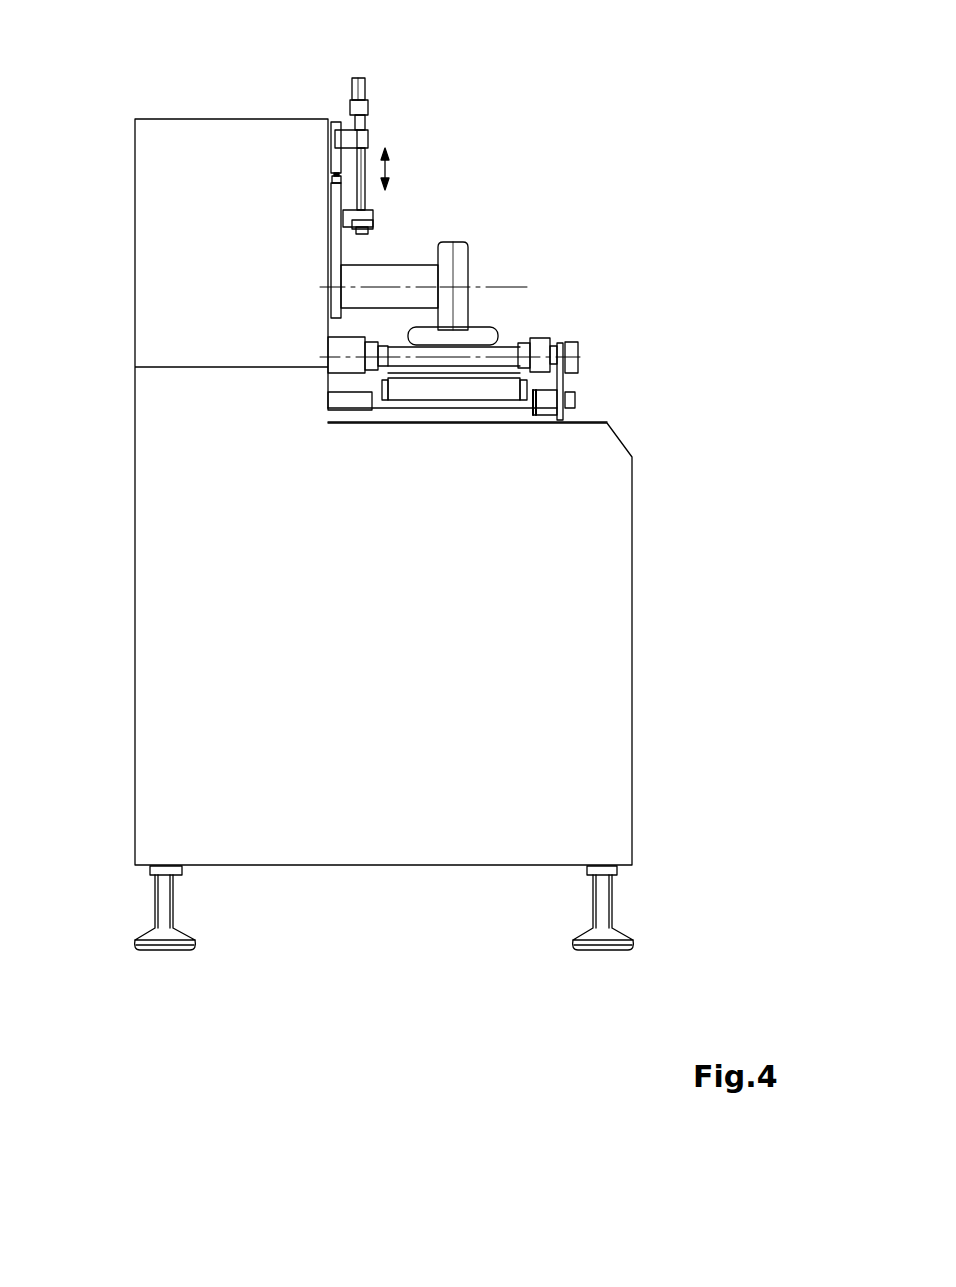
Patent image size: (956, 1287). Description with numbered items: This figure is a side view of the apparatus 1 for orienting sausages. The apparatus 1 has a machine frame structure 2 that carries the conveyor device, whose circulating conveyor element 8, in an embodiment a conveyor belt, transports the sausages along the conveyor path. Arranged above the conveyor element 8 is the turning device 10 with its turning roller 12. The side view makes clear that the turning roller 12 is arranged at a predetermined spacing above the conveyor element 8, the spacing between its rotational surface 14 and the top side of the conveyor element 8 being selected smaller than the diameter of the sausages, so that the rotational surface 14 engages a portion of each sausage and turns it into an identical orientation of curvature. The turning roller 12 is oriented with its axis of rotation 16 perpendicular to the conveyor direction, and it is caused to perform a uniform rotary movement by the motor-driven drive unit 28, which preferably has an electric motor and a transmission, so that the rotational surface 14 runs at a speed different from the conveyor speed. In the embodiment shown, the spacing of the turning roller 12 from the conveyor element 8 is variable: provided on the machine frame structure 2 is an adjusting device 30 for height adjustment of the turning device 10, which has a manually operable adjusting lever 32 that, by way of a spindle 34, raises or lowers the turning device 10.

The apparatus 1 is at (160, 1038).
The machine frame structure 2 is at (595, 668).
The conveyor element 8 is at (497, 363).
The turning device 10 is at (537, 148).
The turning roller 12 is at (470, 308).
The rotational surface 14 is at (460, 250).
The axis of rotation 16 is at (507, 286).
The drive unit 28 is at (372, 278).
The adjusting device 30 is at (338, 107).
The adjusting lever 32 is at (363, 82).
The spindle 34 is at (380, 130).